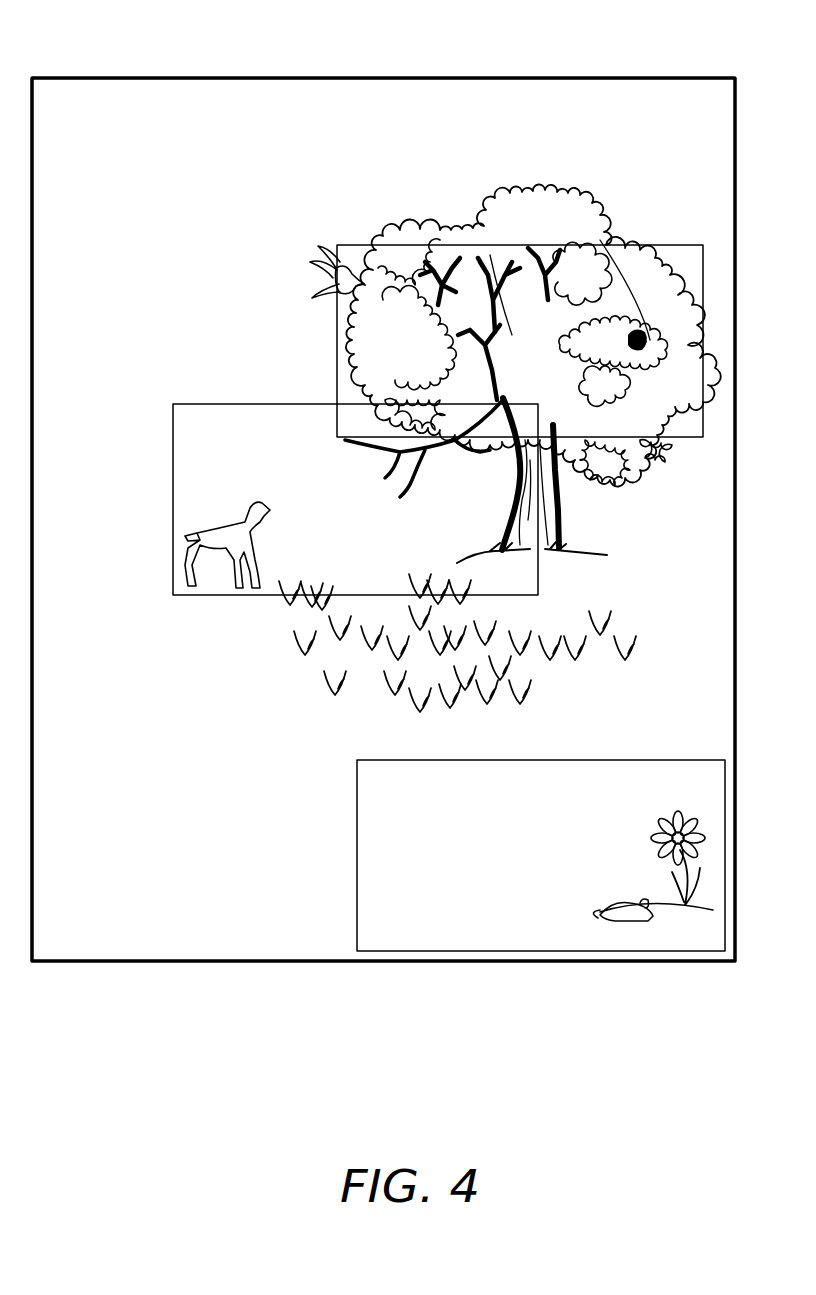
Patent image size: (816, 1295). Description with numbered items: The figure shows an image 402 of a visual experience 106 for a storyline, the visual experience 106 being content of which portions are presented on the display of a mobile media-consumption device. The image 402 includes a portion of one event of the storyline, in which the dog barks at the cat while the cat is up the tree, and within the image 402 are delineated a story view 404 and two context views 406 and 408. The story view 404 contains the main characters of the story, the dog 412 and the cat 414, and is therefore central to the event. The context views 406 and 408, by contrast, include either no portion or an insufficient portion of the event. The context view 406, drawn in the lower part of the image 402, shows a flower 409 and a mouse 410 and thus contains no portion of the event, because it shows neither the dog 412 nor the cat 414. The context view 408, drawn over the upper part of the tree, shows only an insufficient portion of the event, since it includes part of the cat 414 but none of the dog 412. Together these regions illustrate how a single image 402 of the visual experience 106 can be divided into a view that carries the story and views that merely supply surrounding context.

The visual experience 106 is at (675, 78).
The image 402 is at (383, 519).
The story view 404 is at (355, 499).
The context view 406 is at (541, 855).
The context view 408 is at (346, 244).
The flower 409 is at (633, 853).
The mouse 410 is at (597, 897).
The dog 412 is at (187, 502).
The cat 414 is at (443, 468).